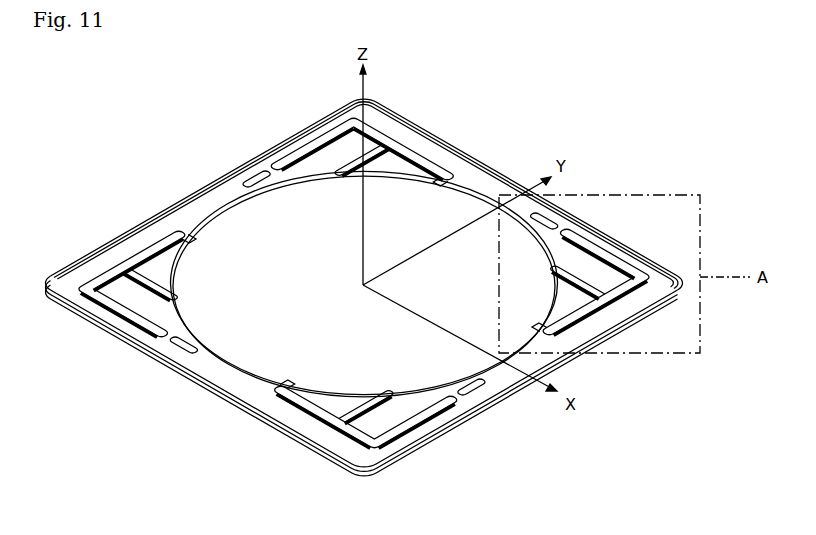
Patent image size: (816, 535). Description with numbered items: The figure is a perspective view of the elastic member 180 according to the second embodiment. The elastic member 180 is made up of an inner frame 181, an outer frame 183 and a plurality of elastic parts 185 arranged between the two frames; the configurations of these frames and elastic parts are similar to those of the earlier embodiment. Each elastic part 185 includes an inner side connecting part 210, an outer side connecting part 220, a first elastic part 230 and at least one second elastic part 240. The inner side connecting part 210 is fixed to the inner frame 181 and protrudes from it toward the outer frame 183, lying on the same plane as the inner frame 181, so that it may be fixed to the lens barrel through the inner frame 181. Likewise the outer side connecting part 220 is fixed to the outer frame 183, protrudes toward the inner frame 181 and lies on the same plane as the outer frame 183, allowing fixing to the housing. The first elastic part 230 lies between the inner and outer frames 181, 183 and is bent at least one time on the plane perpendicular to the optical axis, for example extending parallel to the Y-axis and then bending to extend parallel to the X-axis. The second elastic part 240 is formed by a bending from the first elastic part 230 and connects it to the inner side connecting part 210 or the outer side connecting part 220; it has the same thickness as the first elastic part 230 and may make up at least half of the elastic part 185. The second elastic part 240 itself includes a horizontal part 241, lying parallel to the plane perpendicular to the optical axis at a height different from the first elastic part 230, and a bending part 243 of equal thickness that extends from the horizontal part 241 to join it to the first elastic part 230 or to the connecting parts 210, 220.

The elastic member 180 is at (713, 83).
The inner frame 181 is at (460, 182).
The outer frame 183 is at (492, 163).
The elastic part 185 is at (697, 249).
The inner side connecting part 210 is at (556, 345).
The outer side connecting part 220 is at (550, 226).
The first elastic part 230 is at (660, 275).
The second elastic part 240 is at (628, 276).
The horizontal part 241 is at (600, 256).
The bending part 243 is at (566, 234).